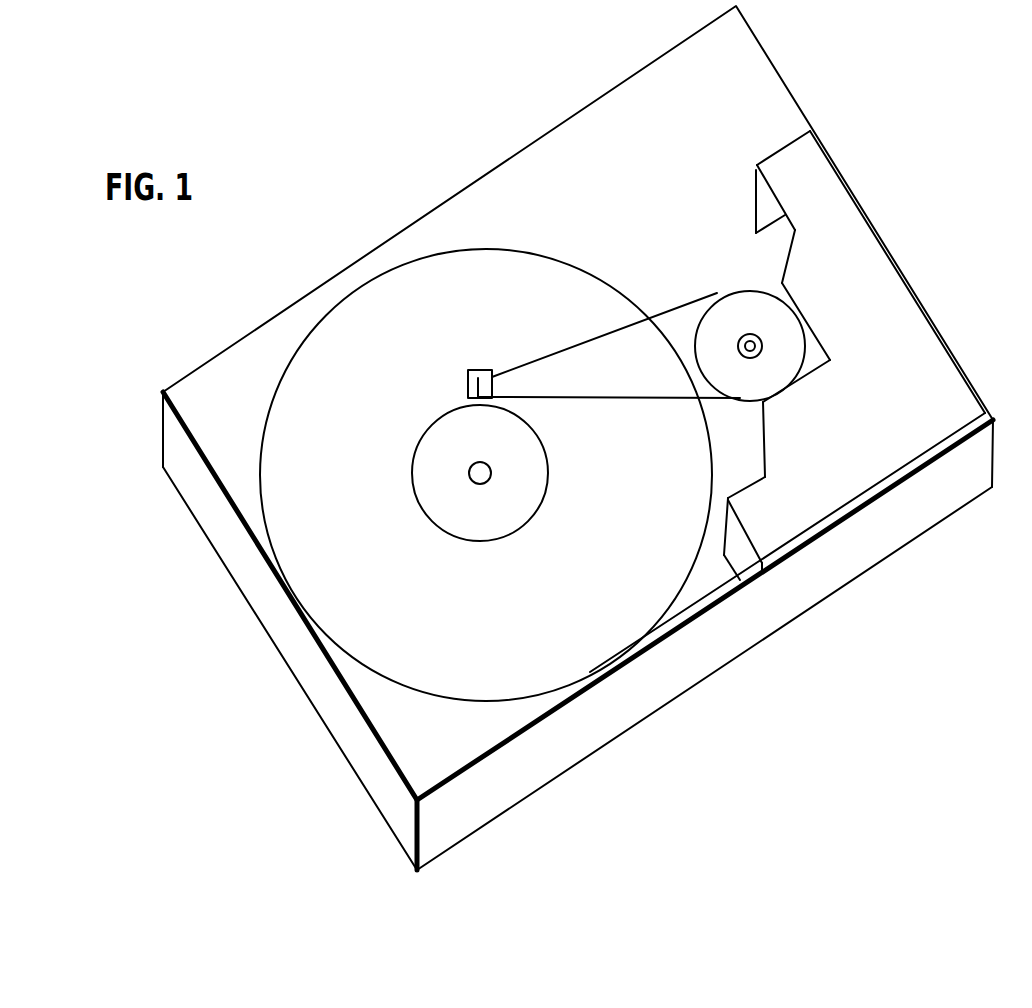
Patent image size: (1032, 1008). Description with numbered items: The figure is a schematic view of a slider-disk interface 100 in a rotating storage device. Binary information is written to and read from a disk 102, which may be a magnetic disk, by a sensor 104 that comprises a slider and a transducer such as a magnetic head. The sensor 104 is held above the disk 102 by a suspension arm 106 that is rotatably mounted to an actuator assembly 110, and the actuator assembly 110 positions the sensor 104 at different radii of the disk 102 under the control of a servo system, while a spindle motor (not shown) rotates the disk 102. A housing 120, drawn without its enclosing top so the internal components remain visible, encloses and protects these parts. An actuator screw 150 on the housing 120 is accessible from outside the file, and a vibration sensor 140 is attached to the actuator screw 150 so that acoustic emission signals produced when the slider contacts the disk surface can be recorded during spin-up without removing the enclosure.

The slider-disk interface 100 is at (352, 195).
The disk 102 is at (290, 407).
The sensor 104 is at (482, 364).
The suspension arm 106 is at (660, 328).
The actuator assembly 110 is at (787, 325).
The housing 120 is at (693, 662).
The vibration sensor 140 is at (757, 353).
The actuator screw 150 is at (750, 338).